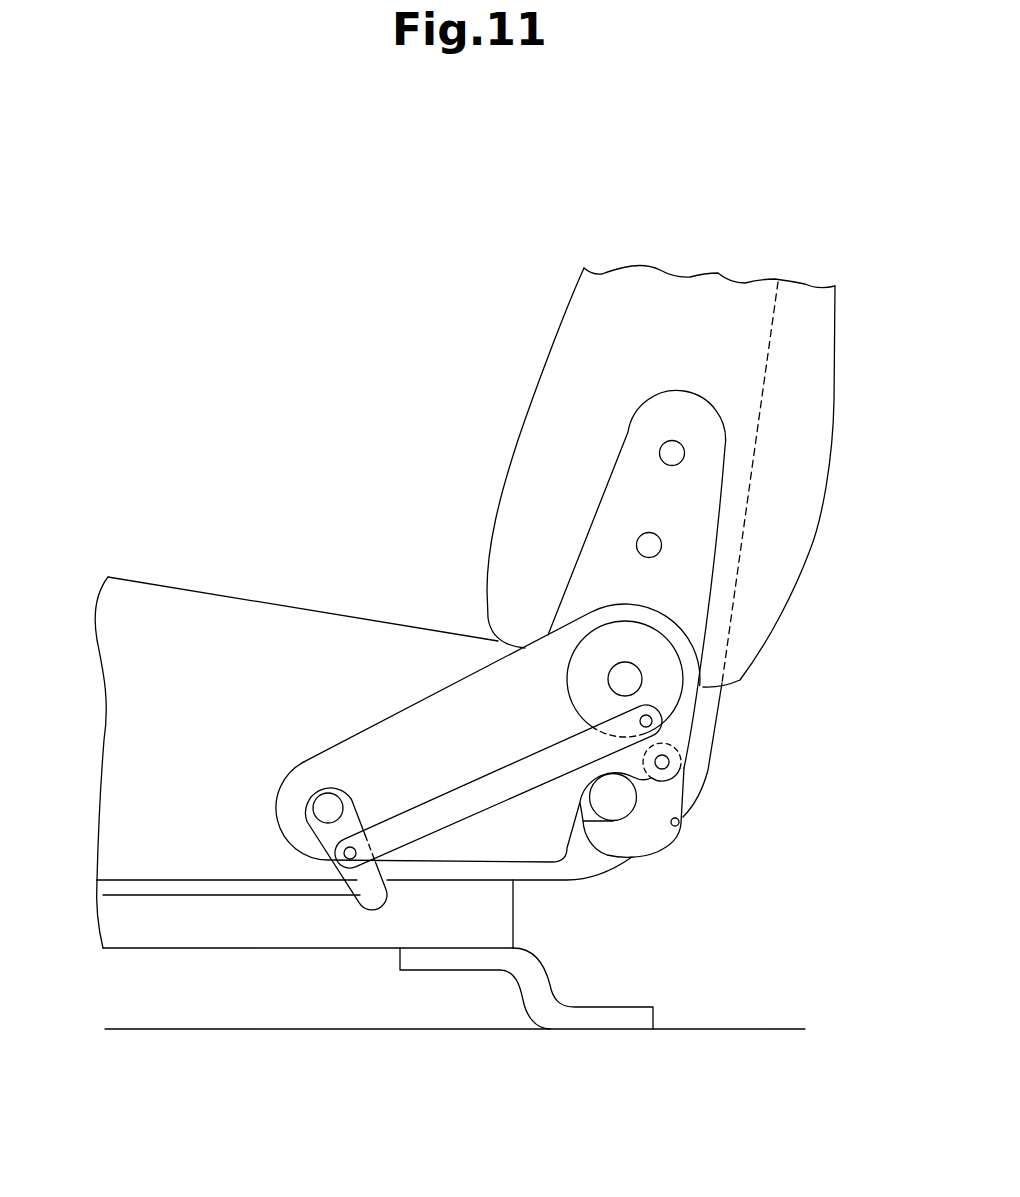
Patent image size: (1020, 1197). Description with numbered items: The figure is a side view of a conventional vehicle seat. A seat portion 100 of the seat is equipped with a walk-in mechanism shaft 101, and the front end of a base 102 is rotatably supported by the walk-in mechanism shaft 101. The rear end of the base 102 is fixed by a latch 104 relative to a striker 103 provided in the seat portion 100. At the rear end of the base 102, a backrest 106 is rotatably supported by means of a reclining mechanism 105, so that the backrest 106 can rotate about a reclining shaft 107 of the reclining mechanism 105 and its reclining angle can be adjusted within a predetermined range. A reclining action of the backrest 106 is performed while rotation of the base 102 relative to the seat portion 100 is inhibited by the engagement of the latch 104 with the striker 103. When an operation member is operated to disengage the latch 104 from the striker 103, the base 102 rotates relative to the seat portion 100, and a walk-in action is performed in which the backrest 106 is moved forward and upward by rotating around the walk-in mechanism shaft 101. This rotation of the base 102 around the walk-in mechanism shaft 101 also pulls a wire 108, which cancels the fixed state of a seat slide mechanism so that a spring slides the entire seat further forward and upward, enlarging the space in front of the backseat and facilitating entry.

The seat portion 100 is at (152, 580).
The walk-in mechanism shaft 101 is at (317, 808).
The base 102 is at (412, 716).
The striker 103 is at (600, 798).
The latch 104 is at (658, 843).
The reclining mechanism 105 is at (678, 702).
The backrest 106 is at (835, 336).
The reclining shaft 107 is at (641, 670).
The wire 108 is at (222, 897).